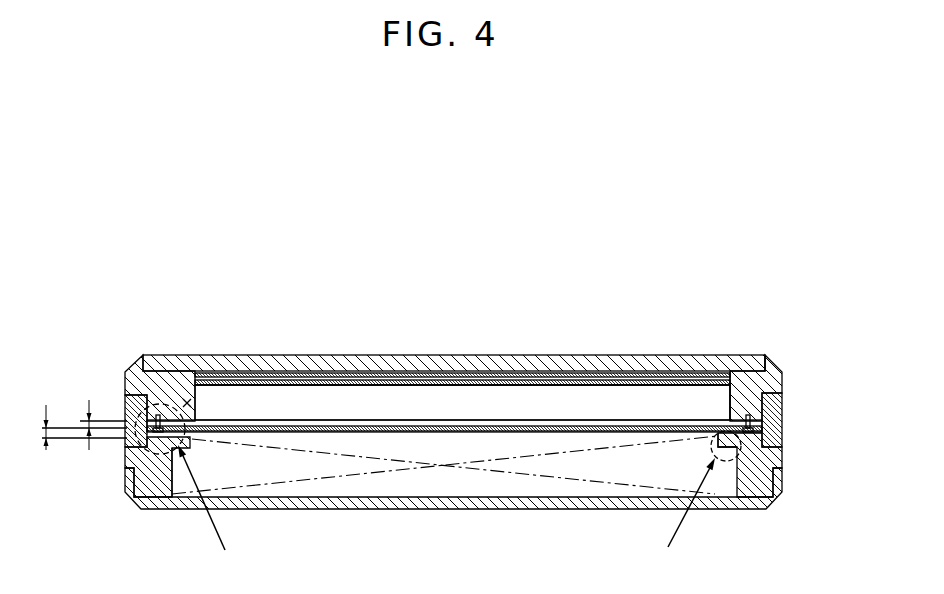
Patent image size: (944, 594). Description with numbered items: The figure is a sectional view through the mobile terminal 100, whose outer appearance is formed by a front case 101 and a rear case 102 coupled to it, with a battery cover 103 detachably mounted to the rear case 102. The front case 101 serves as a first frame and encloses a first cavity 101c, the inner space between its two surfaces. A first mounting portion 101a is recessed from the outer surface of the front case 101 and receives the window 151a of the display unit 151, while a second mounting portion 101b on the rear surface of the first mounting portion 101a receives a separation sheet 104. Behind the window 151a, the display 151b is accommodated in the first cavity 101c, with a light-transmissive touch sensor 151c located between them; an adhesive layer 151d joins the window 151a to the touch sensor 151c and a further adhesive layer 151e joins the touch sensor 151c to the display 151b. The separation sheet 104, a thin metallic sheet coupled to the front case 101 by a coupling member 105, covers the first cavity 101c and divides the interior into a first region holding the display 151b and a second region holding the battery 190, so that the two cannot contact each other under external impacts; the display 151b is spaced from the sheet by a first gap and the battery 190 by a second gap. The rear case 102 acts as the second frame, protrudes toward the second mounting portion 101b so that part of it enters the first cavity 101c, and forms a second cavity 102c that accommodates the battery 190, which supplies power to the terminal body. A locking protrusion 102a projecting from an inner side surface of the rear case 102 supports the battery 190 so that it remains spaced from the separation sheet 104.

The mobile terminal 100 is at (527, 295).
The front case 101 is at (784, 367).
The first mounting portion 101a is at (753, 378).
The second mounting portion 101b is at (724, 424).
The first cavity 101c is at (186, 400).
The rear case 102 is at (768, 457).
The locking protrusion 102a is at (723, 448).
The second cavity 102c is at (177, 498).
The battery cover 103 is at (772, 508).
The separation sheet 104 is at (381, 433).
The coupling member 105 is at (766, 418).
The display unit 151 is at (457, 297).
The window 151a is at (203, 362).
The display 151b is at (263, 402).
The touch sensor 151c is at (315, 381).
The adhesive layer 151d is at (365, 375).
The adhesive layer 151e is at (428, 383).
The battery 190 is at (440, 480).